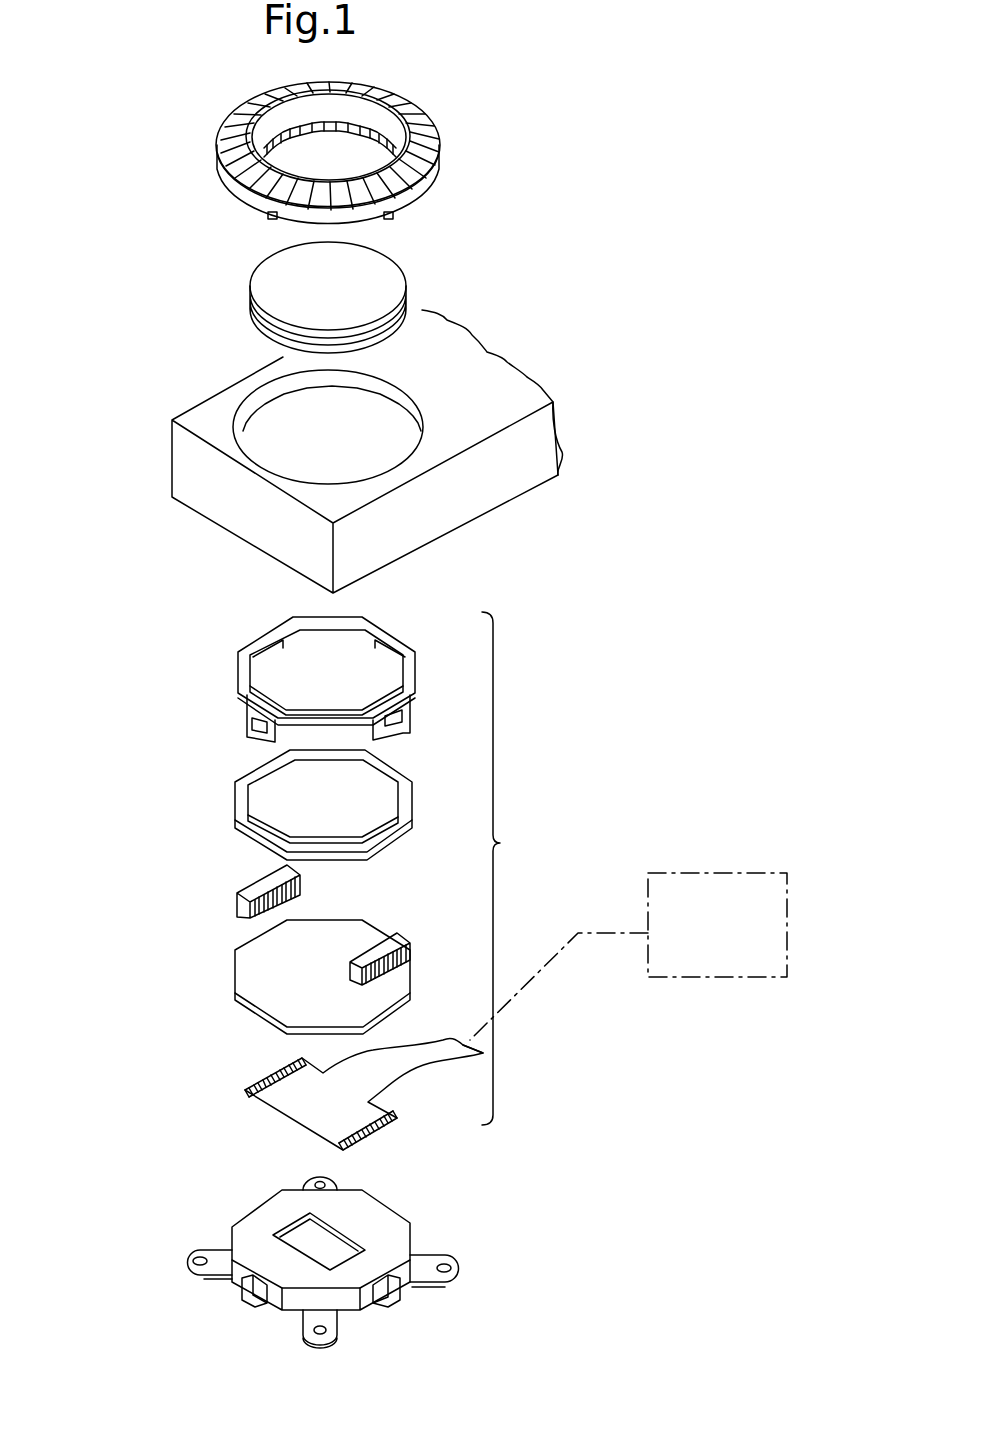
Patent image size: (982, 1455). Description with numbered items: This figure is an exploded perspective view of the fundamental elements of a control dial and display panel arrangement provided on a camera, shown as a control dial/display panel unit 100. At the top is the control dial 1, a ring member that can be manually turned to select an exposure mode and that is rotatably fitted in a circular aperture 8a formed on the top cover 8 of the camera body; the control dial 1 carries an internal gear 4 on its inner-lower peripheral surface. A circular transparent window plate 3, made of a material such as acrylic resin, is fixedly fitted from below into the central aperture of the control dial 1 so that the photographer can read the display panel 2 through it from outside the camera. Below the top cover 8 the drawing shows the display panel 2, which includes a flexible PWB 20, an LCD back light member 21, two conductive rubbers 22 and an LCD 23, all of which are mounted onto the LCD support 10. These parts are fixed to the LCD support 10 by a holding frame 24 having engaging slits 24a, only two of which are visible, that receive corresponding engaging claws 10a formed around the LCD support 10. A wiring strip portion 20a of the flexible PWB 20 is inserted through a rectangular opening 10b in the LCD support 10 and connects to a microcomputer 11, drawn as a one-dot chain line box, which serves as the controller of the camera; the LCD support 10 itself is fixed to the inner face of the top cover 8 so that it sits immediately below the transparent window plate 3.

The control dial/display panel unit 100 is at (95, 642).
The control dial 1 is at (222, 158).
The internal gear 4 is at (320, 128).
The transparent window plate 3 is at (257, 295).
The top cover 8 is at (237, 388).
The circular aperture 8a is at (235, 428).
The display panel 2 is at (505, 868).
The holding frame 24 is at (416, 670).
The engaging slits 24a is at (252, 724).
The LCD 23 is at (407, 800).
The conductive rubbers 22 is at (248, 892).
The LCD back light member 21 is at (393, 995).
The flexible PWB 20 is at (363, 1108).
The wiring strip portion 20a is at (460, 1060).
The microcomputer 11 is at (717, 872).
The LCD support 10 is at (242, 1222).
The rectangular opening 10b is at (355, 1240).
The engaging claws 10a is at (252, 1297).